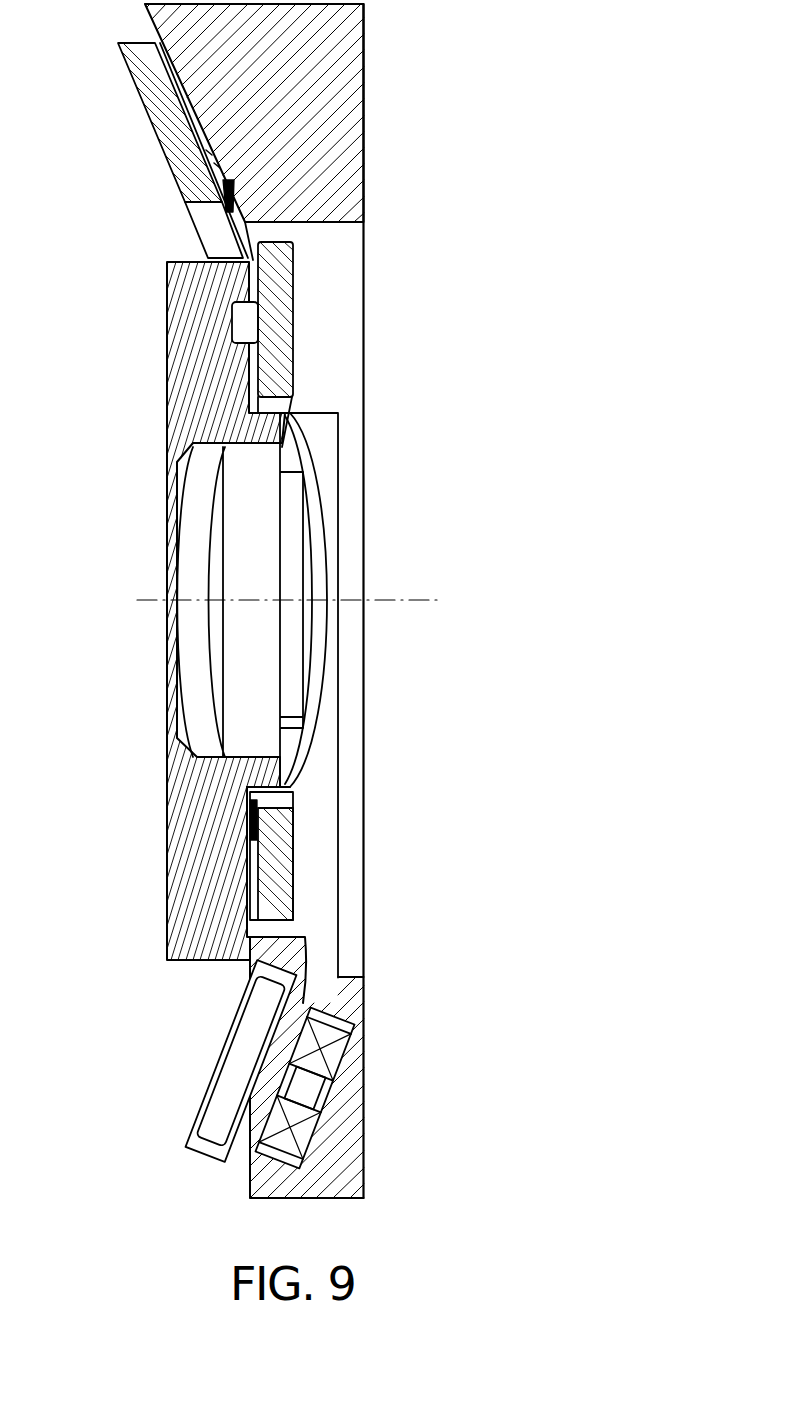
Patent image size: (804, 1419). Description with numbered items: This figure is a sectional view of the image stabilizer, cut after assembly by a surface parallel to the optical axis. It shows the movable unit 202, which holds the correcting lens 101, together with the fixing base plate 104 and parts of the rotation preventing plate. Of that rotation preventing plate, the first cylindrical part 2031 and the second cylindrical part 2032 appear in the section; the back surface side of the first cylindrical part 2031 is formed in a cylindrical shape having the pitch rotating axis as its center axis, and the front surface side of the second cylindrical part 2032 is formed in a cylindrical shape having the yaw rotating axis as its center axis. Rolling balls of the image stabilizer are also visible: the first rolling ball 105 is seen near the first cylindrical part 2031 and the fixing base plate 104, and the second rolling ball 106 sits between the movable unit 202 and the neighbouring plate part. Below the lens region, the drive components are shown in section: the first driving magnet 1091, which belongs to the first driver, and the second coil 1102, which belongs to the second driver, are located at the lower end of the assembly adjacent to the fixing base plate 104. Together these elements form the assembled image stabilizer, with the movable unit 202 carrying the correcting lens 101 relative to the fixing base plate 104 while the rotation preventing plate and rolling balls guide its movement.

The correcting lens 101 is at (188, 562).
The fixing base plate 104 is at (320, 147).
The first rolling ball 105 is at (210, 140).
The second rolling ball 106 is at (250, 325).
The movable unit 202 is at (202, 368).
The first cylindrical part 2031 is at (163, 103).
The second cylindrical part 2032 is at (272, 857).
The first driving magnet 1091 is at (252, 1048).
The second coil 1102 is at (310, 1032).